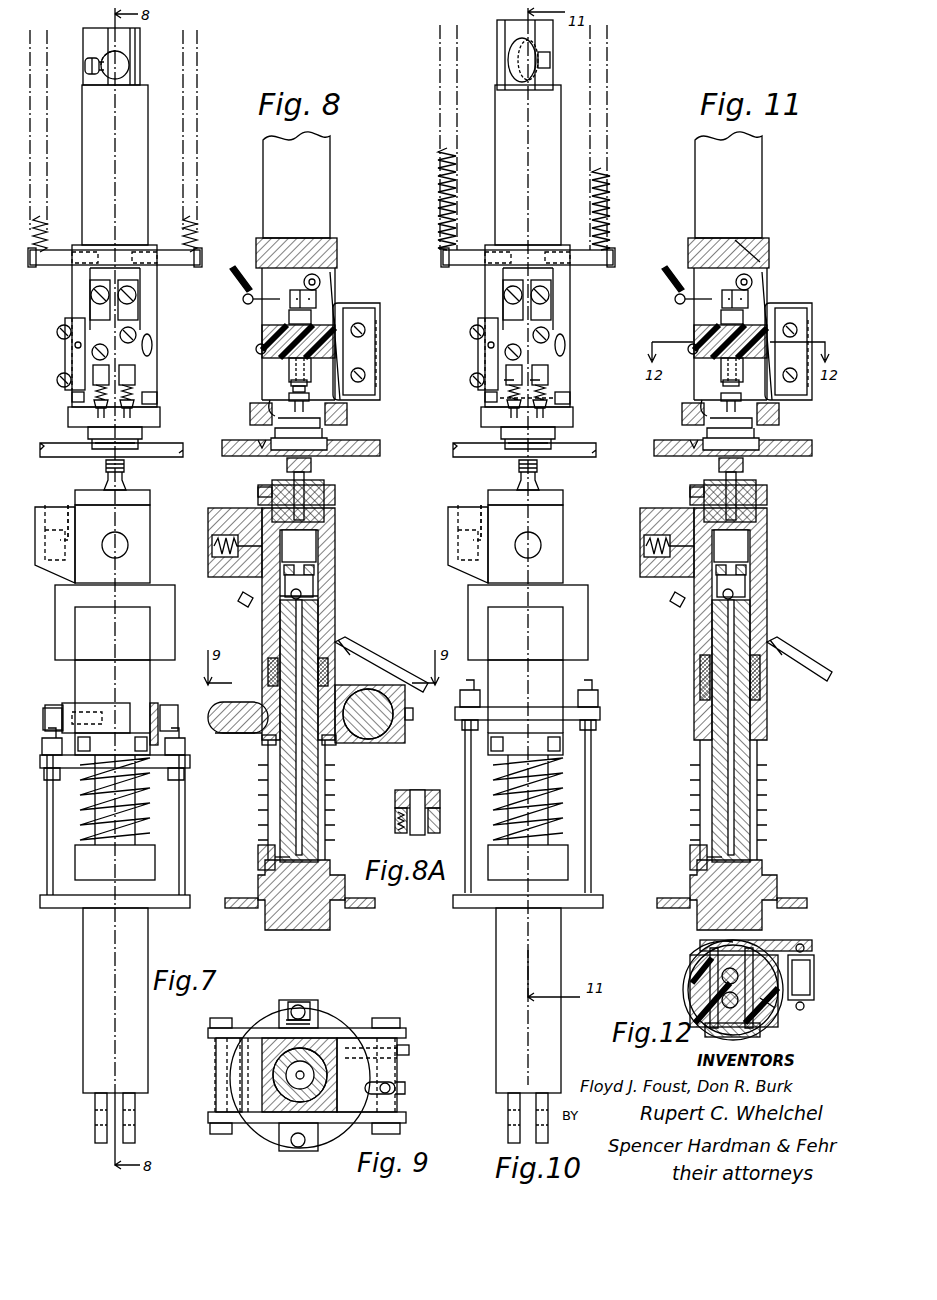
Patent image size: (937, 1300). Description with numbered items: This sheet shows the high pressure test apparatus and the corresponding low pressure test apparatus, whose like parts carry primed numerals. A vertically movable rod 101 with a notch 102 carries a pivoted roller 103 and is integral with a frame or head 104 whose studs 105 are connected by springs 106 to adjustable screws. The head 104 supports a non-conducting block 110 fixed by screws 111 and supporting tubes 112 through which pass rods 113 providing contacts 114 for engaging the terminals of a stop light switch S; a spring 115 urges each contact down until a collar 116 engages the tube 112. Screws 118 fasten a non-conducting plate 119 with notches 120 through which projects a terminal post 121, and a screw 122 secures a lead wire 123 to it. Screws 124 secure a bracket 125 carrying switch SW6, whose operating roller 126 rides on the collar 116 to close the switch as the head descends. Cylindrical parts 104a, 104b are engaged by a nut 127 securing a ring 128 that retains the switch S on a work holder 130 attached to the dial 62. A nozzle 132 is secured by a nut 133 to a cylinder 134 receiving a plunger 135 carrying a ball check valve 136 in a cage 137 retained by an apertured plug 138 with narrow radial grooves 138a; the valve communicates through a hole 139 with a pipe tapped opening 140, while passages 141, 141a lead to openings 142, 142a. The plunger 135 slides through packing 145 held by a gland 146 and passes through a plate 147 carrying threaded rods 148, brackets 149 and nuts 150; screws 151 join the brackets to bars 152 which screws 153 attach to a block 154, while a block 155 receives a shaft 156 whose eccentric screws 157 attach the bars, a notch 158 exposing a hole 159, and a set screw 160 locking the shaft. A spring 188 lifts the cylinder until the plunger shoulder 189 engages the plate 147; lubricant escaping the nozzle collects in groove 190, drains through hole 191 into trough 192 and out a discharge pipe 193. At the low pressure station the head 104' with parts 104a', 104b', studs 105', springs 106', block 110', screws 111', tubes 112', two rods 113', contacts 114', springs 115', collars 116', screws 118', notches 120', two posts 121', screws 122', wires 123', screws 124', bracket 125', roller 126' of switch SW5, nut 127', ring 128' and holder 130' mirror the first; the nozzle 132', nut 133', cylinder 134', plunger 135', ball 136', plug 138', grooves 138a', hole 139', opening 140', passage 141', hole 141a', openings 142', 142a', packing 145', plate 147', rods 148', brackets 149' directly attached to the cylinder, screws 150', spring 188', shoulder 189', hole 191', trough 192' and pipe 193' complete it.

In FIG. 7, the vertically movable rod 101 is at (148, 100).
In FIG. 7, the notch 102 is at (135, 40).
In FIG. 7, the roller 103 is at (128, 62).
In FIG. 7, the frame or head 104 is at (132, 265).
In FIG. 8, the frame or head 104 is at (323, 185).
In FIG. 10, the head 104' is at (562, 223).
In FIG. 11, the head 104' is at (758, 185).
In FIG. 7, the cylindrical part of frame 104a is at (57, 392).
In FIG. 10, the cylindrical part of frame 104a' is at (471, 393).
In FIG. 12, the cylindrical part of frame 104a' is at (698, 945).
In FIG. 7, the cylindrical part of frame 104b is at (169, 393).
In FIG. 10, the cylindrical part of frame 104b' is at (586, 392).
In FIG. 12, the cylindrical part of frame 104b' is at (761, 1029).
In FIG. 7, the studs 105 is at (115, 241).
In FIG. 10, the studs 105' is at (528, 236).
In FIG. 7, the springs 106 is at (130, 223).
In FIG. 10, the springs 106' is at (524, 199).
In FIG. 8, the non-conducting block 110 is at (280, 341).
In FIG. 11, the non-conducting block 110' is at (711, 341).
In FIG. 12, the non-conducting block 110' is at (713, 991).
In FIG. 8, the screws 111 is at (245, 351).
In FIG. 11, the screws 111' is at (679, 367).
In FIG. 8, the tubes 112 is at (314, 345).
In FIG. 11, the tubes 112' is at (748, 345).
In FIG. 12, the tubes 112' is at (745, 971).
In FIG. 8, the rod 113 is at (316, 381).
In FIG. 11, the rods 113' is at (772, 244).
In FIG. 12, the rods 113' is at (789, 1008).
In FIG. 7, the contact 114 is at (112, 390).
In FIG. 8, the contact 114 is at (314, 399).
In FIG. 10, the contacts 114' is at (557, 391).
In FIG. 11, the contacts 114' is at (748, 400).
In FIG. 8, the spring 115 is at (286, 377).
In FIG. 10, the spring 115' is at (569, 370).
In FIG. 11, the spring 115' is at (717, 379).
In FIG. 8, the nut or collar 116 is at (331, 294).
In FIG. 11, the collars 116' is at (764, 294).
In FIG. 7, the screws 118 is at (156, 330).
In FIG. 10, the screws 118' is at (571, 330).
In FIG. 7, the non-conducting plate 119 is at (136, 350).
In FIG. 10, the non-conducting plate 119 is at (549, 350).
In FIG. 7, the notches 120 is at (140, 300).
In FIG. 10, the notches 120' is at (556, 300).
In FIG. 8, the terminal post 121 is at (286, 250).
In FIG. 11, the terminal posts 121' is at (717, 251).
In FIG. 8, the screw 122 is at (250, 306).
In FIG. 11, the screw 122' is at (680, 297).
In FIG. 8, the lead wire 123 is at (232, 281).
In FIG. 11, the wires 123' is at (662, 279).
In FIG. 7, the screws 124 is at (51, 350).
In FIG. 10, the screws 124' is at (465, 341).
In FIG. 7, the bracket 125 is at (60, 354).
In FIG. 8, the bracket 125 is at (396, 355).
In FIG. 10, the bracket 125' is at (472, 354).
In FIG. 11, the bracket 125' is at (819, 371).
In FIG. 12, the bracket 125' is at (756, 932).
In FIG. 8, the operating roller 126 is at (338, 265).
In FIG. 11, the roller 126' is at (776, 269).
In FIG. 8, the nut 127 is at (297, 414).
In FIG. 11, the nut 127' is at (734, 419).
In FIG. 8, the ring 128 is at (252, 399).
In FIG. 11, the ring 128' is at (687, 401).
In FIG. 8, the work holder 130 is at (244, 434).
In FIG. 11, the work holder 130' is at (684, 457).
In FIG. 7, the nozzle 132 is at (133, 475).
In FIG. 8, the nozzle 132 is at (319, 489).
In FIG. 10, the nozzle 132' is at (561, 475).
In FIG. 11, the nozzle 132' is at (752, 489).
In FIG. 7, the nut 133 is at (131, 491).
In FIG. 8, the nut 133 is at (315, 493).
In FIG. 10, the nut 133' is at (550, 491).
In FIG. 11, the nut 133' is at (753, 493).
In FIG. 7, the cylinder 134 is at (131, 630).
In FIG. 8, the cylinder 134 is at (322, 504).
In FIG. 9, the cylinder 134 is at (318, 1049).
In FIG. 10, the cylinder 134' is at (550, 630).
In FIG. 11, the cylinder 134' is at (755, 504).
In FIG. 7, the plunger 135 is at (95, 994).
In FIG. 8, the plunger 135 is at (323, 728).
In FIG. 9, the plunger 135 is at (320, 1075).
In FIG. 10, the plunger 135' is at (551, 981).
In FIG. 11, the plunger 135' is at (755, 731).
In FIG. 8, the ball check valve 136 is at (332, 587).
In FIG. 11, the ball check valve 136' is at (766, 587).
In FIG. 8, the cage 137 is at (318, 622).
In FIG. 8, the apertured plug 138 is at (329, 544).
In FIG. 8A, the apertured plug 138 is at (417, 800).
In FIG. 11, the apertured plug 138' is at (765, 537).
In FIG. 8, the radial grooves 138a is at (335, 567).
In FIG. 8A, the radial grooves 138a is at (434, 822).
In FIG. 11, the radial grooves 138a' is at (770, 567).
In FIG. 8, the hole 139 is at (351, 727).
In FIG. 11, the hole 139' is at (772, 727).
In FIG. 8, the pipe tapped opening 140 is at (260, 851).
In FIG. 11, the pipe tapped opening 140' is at (688, 851).
In FIG. 8, the passage 141 is at (235, 530).
In FIG. 11, the passage 141' is at (670, 528).
In FIG. 7, the passage 141a is at (79, 508).
In FIG. 10, the hole 141a' is at (497, 507).
In FIG. 7, the pipe tapped opening 142 is at (103, 553).
In FIG. 8, the pipe tapped opening 142 is at (223, 546).
In FIG. 10, the threaded opening 142' is at (491, 410).
In FIG. 11, the threaded opening 142' is at (667, 518).
In FIG. 7, the pipe tapped opening 142a is at (51, 530).
In FIG. 10, the pipe tapped opening 142a' is at (463, 530).
In FIG. 8, the packing 145 is at (300, 669).
In FIG. 11, the packing 145' is at (730, 677).
In FIG. 8, the packing gland 146 is at (262, 740).
In FIG. 7, the plate 147 is at (115, 910).
In FIG. 8, the plate 147 is at (318, 893).
In FIG. 10, the plate 147' is at (540, 910).
In FIG. 11, the plate 147' is at (737, 911).
In FIG. 7, the threaded rods 148 is at (126, 825).
In FIG. 10, the threaded rods 148' is at (554, 806).
In FIG. 7, the brackets 149 is at (132, 763).
In FIG. 9, the brackets 149 is at (307, 1045).
In FIG. 10, the brackets 149' is at (555, 711).
In FIG. 7, the nuts 150 is at (133, 758).
In FIG. 9, the nuts 150 is at (298, 1057).
In FIG. 10, the screws 150' is at (550, 707).
In FIG. 7, the screws 151 is at (172, 712).
In FIG. 9, the screws 151 is at (312, 1000).
In FIG. 7, the bars 152 is at (52, 705).
In FIG. 9, the bars 152 is at (245, 1028).
In FIG. 7, the screws 153 is at (50, 712).
In FIG. 9, the screws 153 is at (222, 1012).
In FIG. 7, the block 154 is at (100, 703).
In FIG. 8, the block 154 is at (248, 704).
In FIG. 9, the block 154 is at (216, 1065).
In FIG. 8, the block 155 is at (336, 744).
In FIG. 8, the shaft 156 is at (406, 720).
In FIG. 9, the eccentrically located screws 157 is at (400, 1024).
In FIG. 9, the notch 158 is at (405, 1094).
In FIG. 9, the hole 159 is at (395, 1088).
In FIG. 9, the set screw 160 is at (409, 1050).
In FIG. 7, the spring 188 is at (123, 800).
In FIG. 8, the spring 188 is at (315, 802).
In FIG. 10, the spring 188' is at (571, 800).
In FIG. 11, the spring 188' is at (754, 802).
In FIG. 8, the shoulder 189 is at (284, 894).
In FIG. 11, the shoulder 189' is at (716, 895).
In FIG. 8, the groove 190 is at (282, 482).
In FIG. 11, the groove 190 is at (716, 482).
In FIG. 8, the hole 191 is at (254, 478).
In FIG. 11, the hole 191' is at (699, 485).
In FIG. 7, the trough 192 is at (133, 659).
In FIG. 8, the trough 192 is at (237, 603).
In FIG. 10, the trough 192' is at (508, 659).
In FIG. 11, the trough 192' is at (671, 605).
In FIG. 8, the discharge pipe 193 is at (385, 664).
In FIG. 11, the discharge pipe 193' is at (799, 652).
In FIG. 7, the stop light switch S is at (142, 437).
In FIG. 8, the stop light switch S is at (322, 440).
In FIG. 10, the stop light switch S is at (503, 435).
In FIG. 11, the stop light switch S is at (706, 435).
In FIG. 7, the dial 62 is at (176, 443).
In FIG. 8, the dial 62 is at (372, 442).
In FIG. 10, the dial 62 is at (590, 443).
In FIG. 11, the dial 62 is at (665, 445).
In FIG. 11, the switch SW5 is at (792, 305).
In FIG. 12, the switch SW5 is at (810, 950).
In FIG. 8, the switch SW6 is at (382, 310).